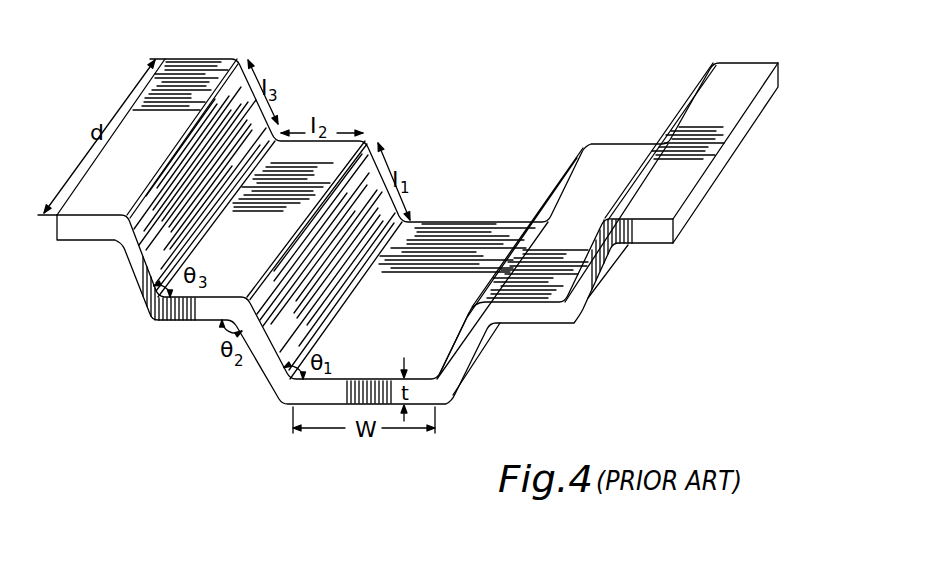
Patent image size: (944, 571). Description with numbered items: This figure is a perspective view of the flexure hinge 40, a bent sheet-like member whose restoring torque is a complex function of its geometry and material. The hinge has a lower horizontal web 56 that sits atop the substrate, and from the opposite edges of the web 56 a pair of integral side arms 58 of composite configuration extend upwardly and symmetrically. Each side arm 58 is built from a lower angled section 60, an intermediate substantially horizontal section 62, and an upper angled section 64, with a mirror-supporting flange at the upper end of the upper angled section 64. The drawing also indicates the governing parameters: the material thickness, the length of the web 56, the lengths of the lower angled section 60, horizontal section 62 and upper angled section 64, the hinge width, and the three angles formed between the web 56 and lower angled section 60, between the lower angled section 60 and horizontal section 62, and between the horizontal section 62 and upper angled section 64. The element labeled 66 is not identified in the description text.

The flexure hinge 40 is at (64, 152).
The lower horizontal web 56 is at (380, 327).
The side arm 58 is at (147, 323).
The lower angled section 60 is at (300, 310).
The intermediate substantially horizontal section 62 is at (247, 257).
The upper angled section 64 is at (173, 222).
The top flange 66 is at (185, 80).